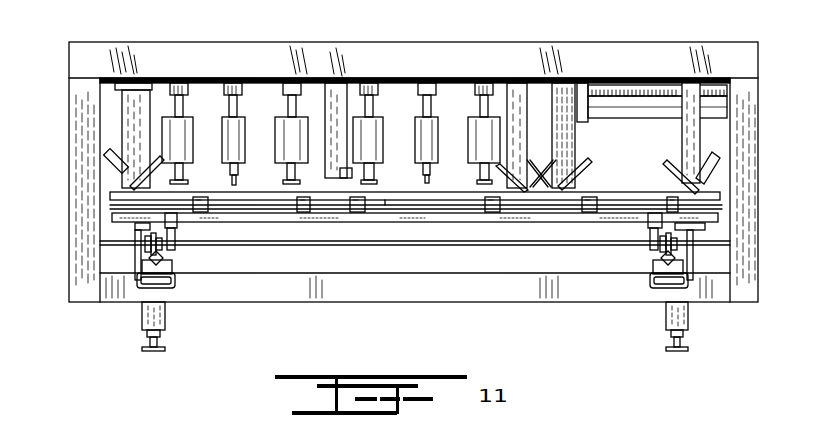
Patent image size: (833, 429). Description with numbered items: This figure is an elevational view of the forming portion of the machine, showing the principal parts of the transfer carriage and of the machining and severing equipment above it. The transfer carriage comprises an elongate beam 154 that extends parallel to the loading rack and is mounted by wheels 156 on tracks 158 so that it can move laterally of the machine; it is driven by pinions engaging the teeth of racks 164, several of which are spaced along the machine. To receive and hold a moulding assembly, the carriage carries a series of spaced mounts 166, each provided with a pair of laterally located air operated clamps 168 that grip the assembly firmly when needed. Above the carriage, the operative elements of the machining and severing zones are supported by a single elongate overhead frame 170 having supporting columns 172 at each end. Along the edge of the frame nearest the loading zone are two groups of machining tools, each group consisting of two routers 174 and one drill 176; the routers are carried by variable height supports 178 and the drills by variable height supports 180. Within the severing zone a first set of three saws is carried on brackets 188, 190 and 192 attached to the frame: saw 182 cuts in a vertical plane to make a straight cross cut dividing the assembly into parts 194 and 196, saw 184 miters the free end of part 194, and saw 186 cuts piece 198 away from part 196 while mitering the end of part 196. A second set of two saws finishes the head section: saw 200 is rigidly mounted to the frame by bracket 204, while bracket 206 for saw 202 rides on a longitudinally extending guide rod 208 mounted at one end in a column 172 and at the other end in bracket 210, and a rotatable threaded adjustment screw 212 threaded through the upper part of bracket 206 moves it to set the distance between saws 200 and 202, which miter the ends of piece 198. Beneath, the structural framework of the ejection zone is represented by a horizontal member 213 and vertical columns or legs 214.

The elongate beam 154 is at (432, 224).
The wheels 156 is at (150, 258).
The tracks 158 is at (163, 258).
The racks 164 is at (137, 237).
The mounts 166 is at (300, 212).
The air operated clamps 168 is at (306, 212).
The overhead frame 170 is at (160, 42).
The supporting columns 172 is at (68, 118).
The routers 174 is at (187, 117).
The drill 176 is at (246, 163).
The variable height supports 178 is at (173, 105).
The variable height supports 180 is at (228, 105).
The saw 182 is at (262, 216).
The saw 184 is at (130, 188).
The saw 186 is at (512, 190).
The bracket 188 is at (333, 95).
The bracket 190 is at (127, 95).
The bracket 192 is at (515, 95).
The part 194 is at (191, 193).
The part 196 is at (384, 193).
The piece 198 is at (647, 182).
The saw 200 is at (584, 164).
The saw 202 is at (676, 170).
The bracket 204 is at (563, 92).
The bracket 206 is at (684, 140).
The guide rod 208 is at (657, 99).
The bracket 210 is at (583, 90).
The adjustment screw 212 is at (635, 90).
The horizontal member 213 is at (504, 303).
The vertical columns 214 is at (166, 317).